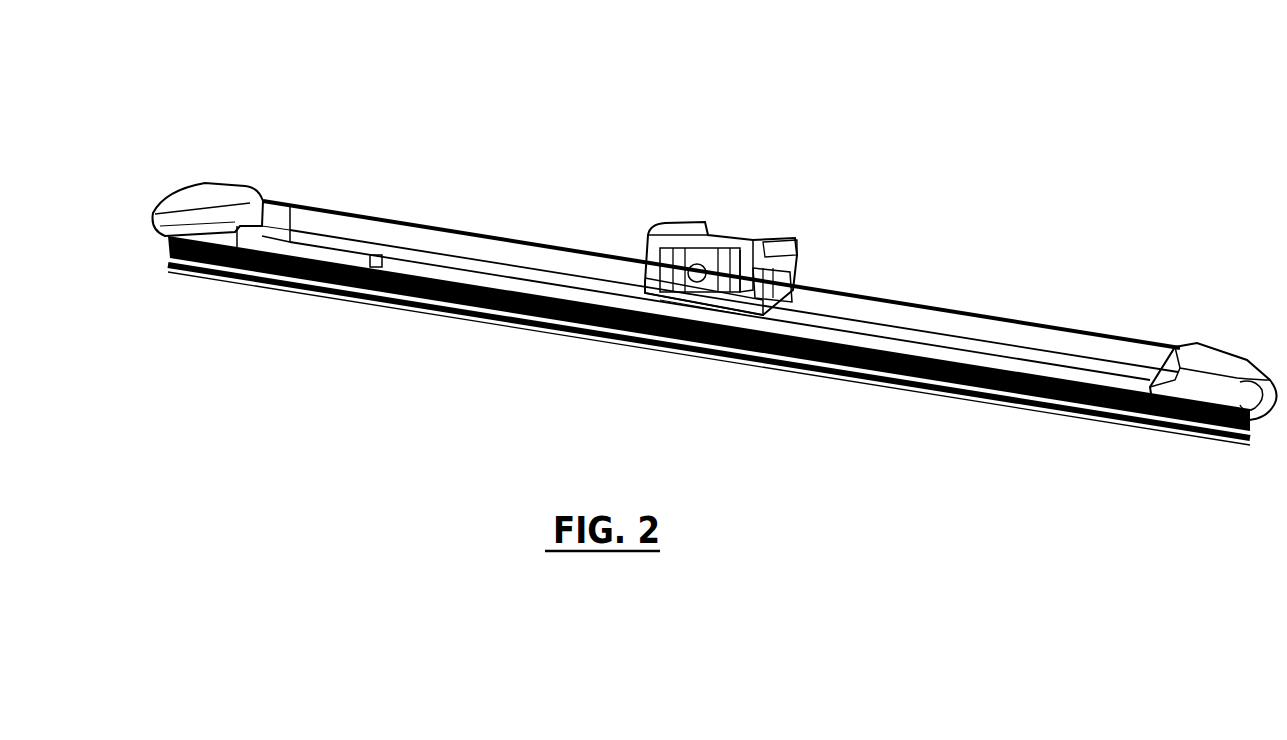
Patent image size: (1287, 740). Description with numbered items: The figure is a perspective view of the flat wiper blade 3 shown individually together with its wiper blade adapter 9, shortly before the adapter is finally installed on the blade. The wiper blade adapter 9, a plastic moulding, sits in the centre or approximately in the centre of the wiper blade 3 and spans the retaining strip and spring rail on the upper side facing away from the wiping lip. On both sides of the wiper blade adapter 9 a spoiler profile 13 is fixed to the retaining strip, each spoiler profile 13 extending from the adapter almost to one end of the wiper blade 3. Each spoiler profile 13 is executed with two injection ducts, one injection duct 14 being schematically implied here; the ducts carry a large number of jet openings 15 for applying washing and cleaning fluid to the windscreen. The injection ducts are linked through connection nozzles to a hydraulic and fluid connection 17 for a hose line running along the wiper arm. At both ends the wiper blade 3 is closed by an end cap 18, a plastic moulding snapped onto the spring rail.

The wiper blade 3 is at (606, 162).
The wiper blade adapter 9 is at (725, 232).
The spoiler profile 13 is at (721, 215).
The injection duct 14 is at (346, 174).
The jet openings 15 is at (273, 187).
The hydraulic and fluid connection 17 is at (826, 259).
The end cap 18 is at (715, 301).